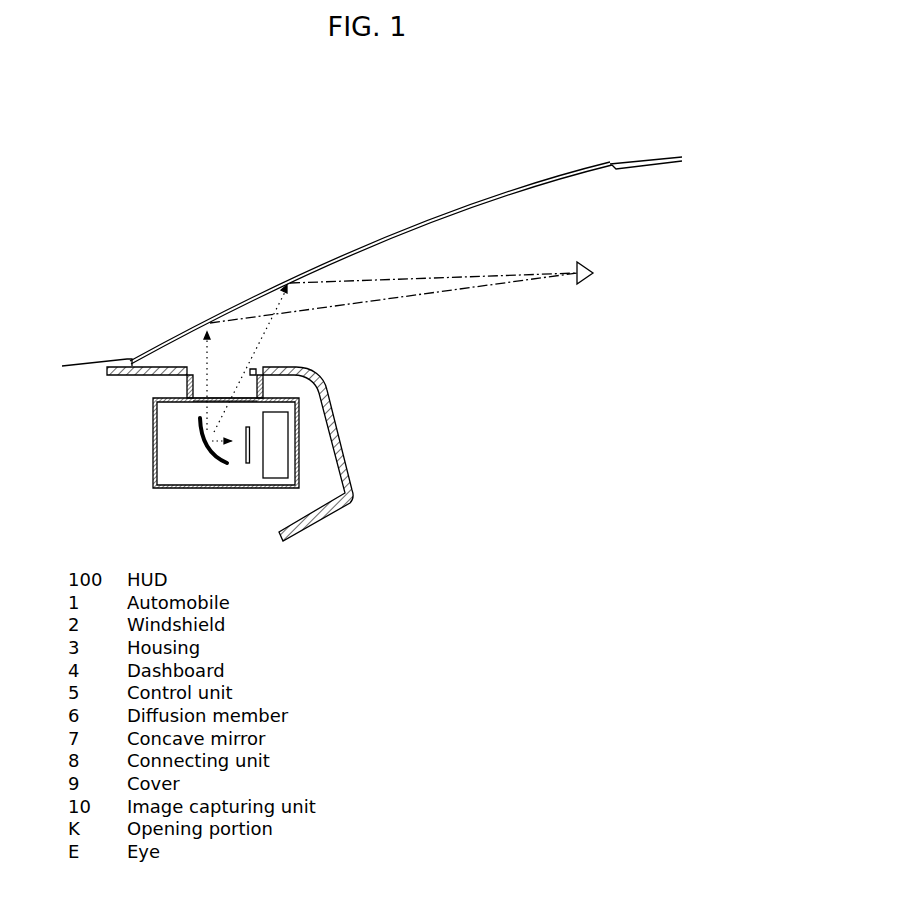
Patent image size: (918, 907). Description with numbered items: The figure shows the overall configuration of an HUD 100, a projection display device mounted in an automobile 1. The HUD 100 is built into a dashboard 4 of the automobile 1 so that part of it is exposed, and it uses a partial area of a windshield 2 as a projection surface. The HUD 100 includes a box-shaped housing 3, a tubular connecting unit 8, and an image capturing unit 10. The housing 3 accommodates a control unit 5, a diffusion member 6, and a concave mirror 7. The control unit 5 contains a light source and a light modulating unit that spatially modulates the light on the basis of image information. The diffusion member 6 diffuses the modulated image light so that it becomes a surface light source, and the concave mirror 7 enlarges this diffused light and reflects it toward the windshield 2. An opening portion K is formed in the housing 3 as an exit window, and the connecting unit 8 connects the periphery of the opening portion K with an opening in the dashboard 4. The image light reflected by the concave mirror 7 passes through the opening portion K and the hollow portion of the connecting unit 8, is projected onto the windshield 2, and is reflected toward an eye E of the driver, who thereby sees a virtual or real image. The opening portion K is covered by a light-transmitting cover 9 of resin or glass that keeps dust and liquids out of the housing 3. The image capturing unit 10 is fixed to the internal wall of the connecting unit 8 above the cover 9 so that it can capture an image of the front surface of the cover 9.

The HUD 100 is at (188, 425).
The automobile 1 is at (425, 156).
The windshield 2 is at (362, 243).
The housing 3 is at (151, 432).
The dashboard 4 is at (337, 377).
The control unit 5 is at (272, 480).
The diffusion member 6 is at (247, 464).
The concave mirror 7 is at (212, 455).
The connecting unit 8 is at (190, 366).
The cover 9 is at (222, 396).
The image capturing unit 10 is at (257, 370).
The opening portion K is at (193, 400).
The eye E is at (597, 265).